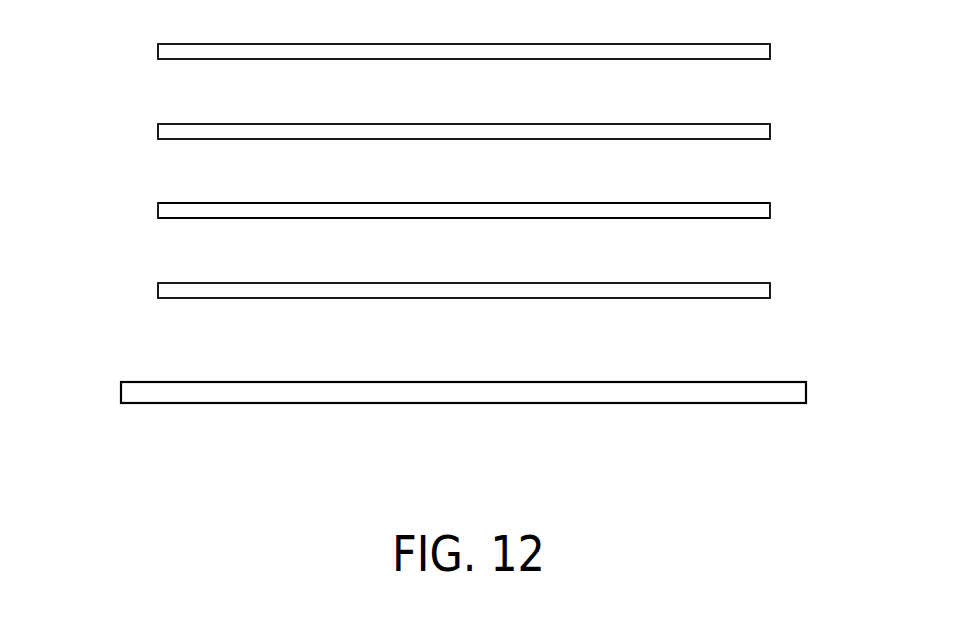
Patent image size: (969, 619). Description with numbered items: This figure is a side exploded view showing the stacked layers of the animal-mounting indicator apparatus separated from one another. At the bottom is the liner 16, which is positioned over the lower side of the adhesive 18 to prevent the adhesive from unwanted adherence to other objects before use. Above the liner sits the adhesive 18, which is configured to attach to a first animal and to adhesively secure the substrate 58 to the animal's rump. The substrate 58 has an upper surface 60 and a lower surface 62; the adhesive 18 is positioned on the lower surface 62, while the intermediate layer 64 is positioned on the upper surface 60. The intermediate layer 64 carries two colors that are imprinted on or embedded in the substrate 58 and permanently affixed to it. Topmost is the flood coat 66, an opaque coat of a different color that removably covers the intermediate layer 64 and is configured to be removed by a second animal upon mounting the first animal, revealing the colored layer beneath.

The flood coat 66 is at (157, 53).
The intermediate layer 64 is at (157, 135).
The substrate 58 is at (157, 214).
The upper surface 60 is at (745, 203).
The lower surface 62 is at (752, 218).
The adhesive 18 is at (157, 294).
The liner 16 is at (806, 393).